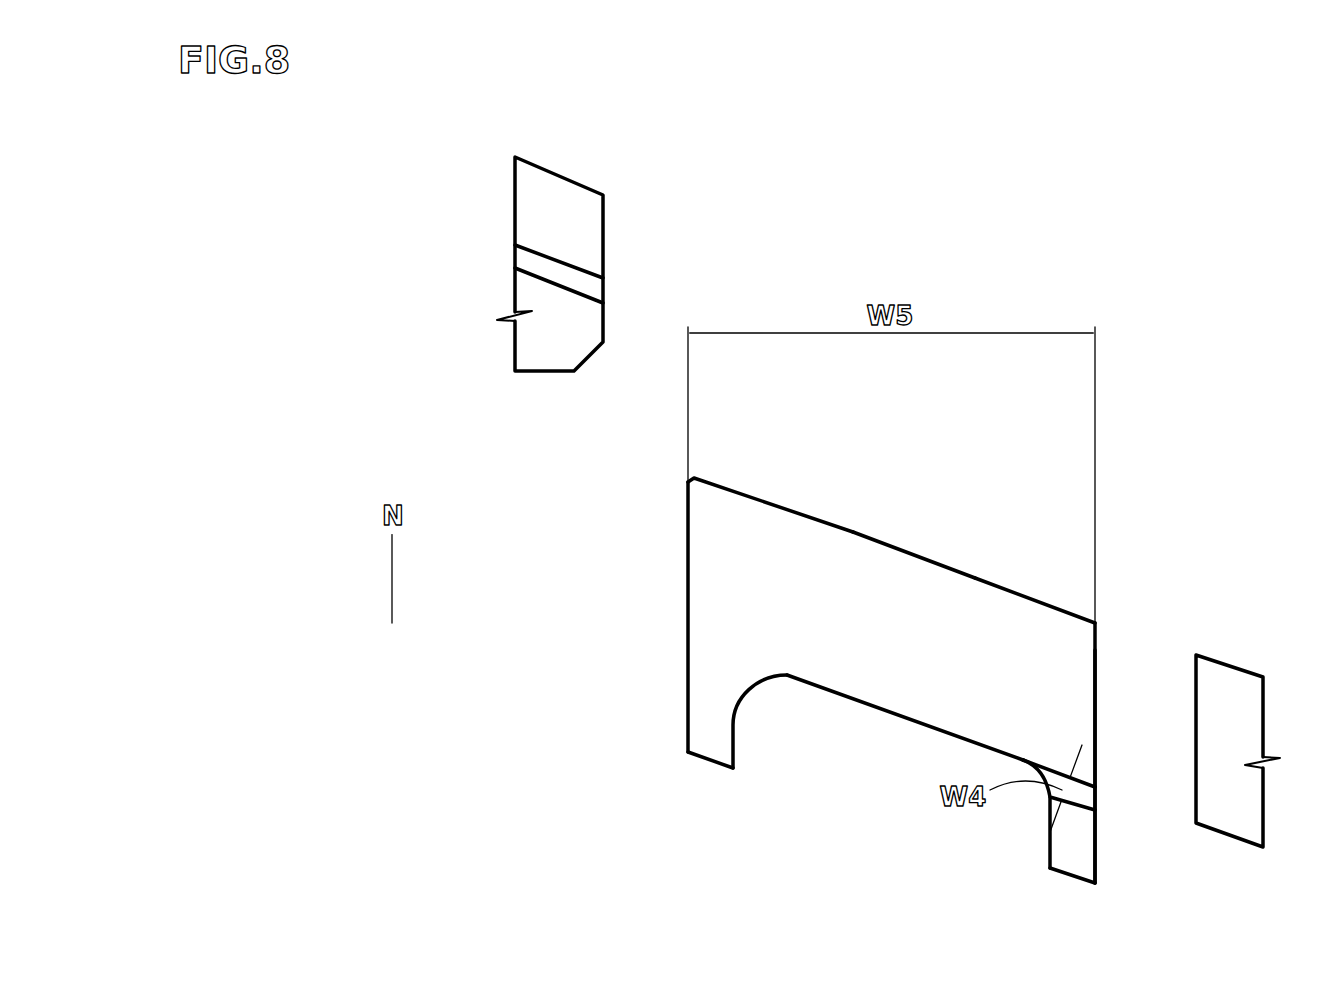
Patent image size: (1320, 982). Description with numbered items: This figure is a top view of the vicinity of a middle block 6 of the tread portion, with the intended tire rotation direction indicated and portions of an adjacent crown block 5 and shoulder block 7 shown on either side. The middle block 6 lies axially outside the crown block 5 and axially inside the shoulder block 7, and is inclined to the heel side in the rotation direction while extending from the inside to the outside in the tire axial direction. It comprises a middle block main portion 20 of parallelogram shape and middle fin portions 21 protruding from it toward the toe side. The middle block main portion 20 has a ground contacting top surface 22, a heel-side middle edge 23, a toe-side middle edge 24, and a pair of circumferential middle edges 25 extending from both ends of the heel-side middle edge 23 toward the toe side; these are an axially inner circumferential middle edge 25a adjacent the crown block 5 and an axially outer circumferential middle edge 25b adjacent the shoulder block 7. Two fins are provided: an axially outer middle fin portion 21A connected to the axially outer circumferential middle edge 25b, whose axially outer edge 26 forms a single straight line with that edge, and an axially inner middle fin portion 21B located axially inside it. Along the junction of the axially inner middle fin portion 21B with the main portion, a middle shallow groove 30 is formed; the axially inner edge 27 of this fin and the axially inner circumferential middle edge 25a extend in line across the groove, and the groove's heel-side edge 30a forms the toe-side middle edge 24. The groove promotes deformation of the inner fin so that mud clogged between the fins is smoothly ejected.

The crown block 5 is at (1246, 653).
The middle block 6 is at (872, 673).
The shoulder block 7 is at (622, 236).
The middle block main portion 20 is at (1015, 630).
The middle fin portion 21 is at (1006, 836).
The axially outer middle fin portion 21A is at (713, 722).
The axially inner middle fin portion 21B is at (1075, 848).
The ground contacting top surface 22 is at (937, 620).
The heel-side middle edge 23 is at (822, 518).
The toe-side middle edge 24 is at (900, 715).
The circumferential middle edges 25 is at (1119, 659).
The axially inner circumferential middle edge 25a is at (1095, 693).
The axially outer circumferential middle edge 25b is at (688, 607).
The axially outer edge 26 is at (688, 707).
The axially inner edge 27 is at (1095, 860).
The middle shallow groove 30 is at (1010, 811).
The edge of the middle shallow groove 30a is at (1080, 788).